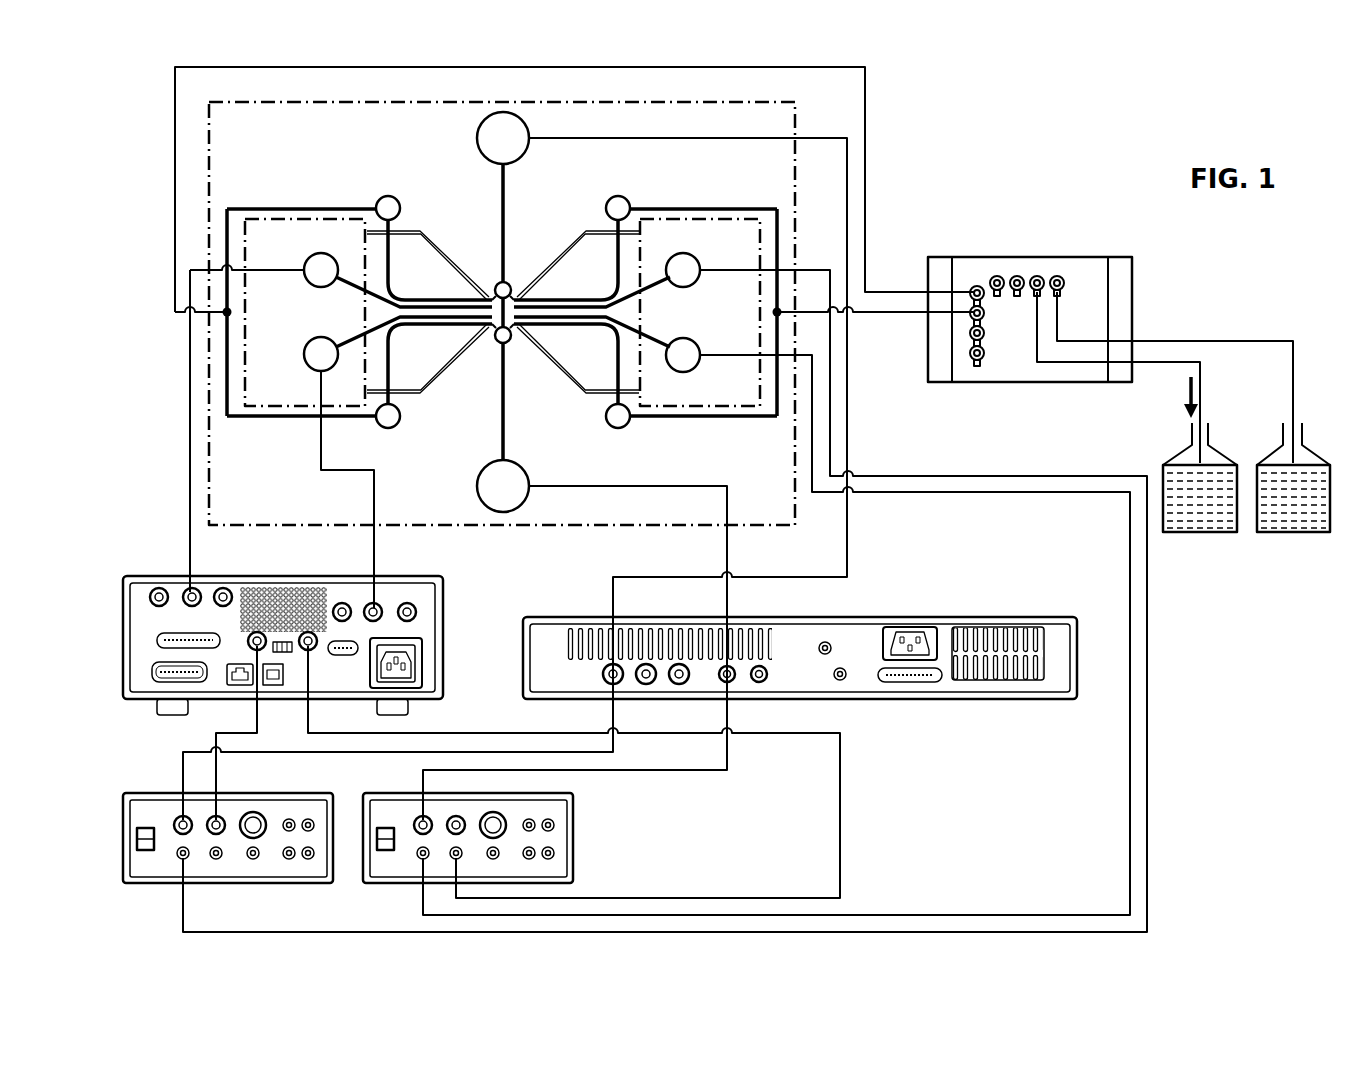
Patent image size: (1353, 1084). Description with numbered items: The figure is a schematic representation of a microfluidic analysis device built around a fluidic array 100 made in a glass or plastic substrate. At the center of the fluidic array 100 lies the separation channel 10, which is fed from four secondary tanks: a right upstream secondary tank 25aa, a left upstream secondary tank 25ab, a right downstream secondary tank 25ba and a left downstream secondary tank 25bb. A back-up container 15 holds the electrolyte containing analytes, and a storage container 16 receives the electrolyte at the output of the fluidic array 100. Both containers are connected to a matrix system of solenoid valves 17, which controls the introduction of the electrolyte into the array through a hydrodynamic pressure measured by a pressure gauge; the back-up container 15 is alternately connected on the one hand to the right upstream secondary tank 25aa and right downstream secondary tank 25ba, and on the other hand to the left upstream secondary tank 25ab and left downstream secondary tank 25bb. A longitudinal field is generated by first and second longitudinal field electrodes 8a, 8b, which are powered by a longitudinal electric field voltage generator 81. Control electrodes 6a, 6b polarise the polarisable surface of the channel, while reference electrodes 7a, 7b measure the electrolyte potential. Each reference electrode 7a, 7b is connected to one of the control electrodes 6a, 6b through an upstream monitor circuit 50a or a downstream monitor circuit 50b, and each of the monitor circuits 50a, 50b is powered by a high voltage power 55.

The fluidic array 100 is at (506, 543).
The separation channel 10 is at (510, 318).
The control electrode 6a is at (307, 262).
The control electrode 6b is at (307, 363).
The reference electrode 7a is at (698, 262).
The reference electrode 7b is at (698, 362).
The first longitudinal field electrode 8a is at (475, 138).
The second longitudinal field electrode 8b is at (475, 486).
The right upstream secondary tank 25aa is at (402, 208).
The left upstream secondary tank 25ab is at (604, 208).
The right downstream secondary tank 25ba is at (402, 416).
The left downstream secondary tank 25bb is at (604, 416).
The matrix system of solenoid valves 17 is at (1031, 254).
The back-up container 15 is at (1178, 449).
The storage container 16 is at (1272, 449).
The high voltage power 55 is at (170, 574).
The longitudinal electric field voltage generator 81 is at (854, 614).
The upstream monitor circuit 50a is at (163, 889).
The downstream monitor circuit 50b is at (403, 889).